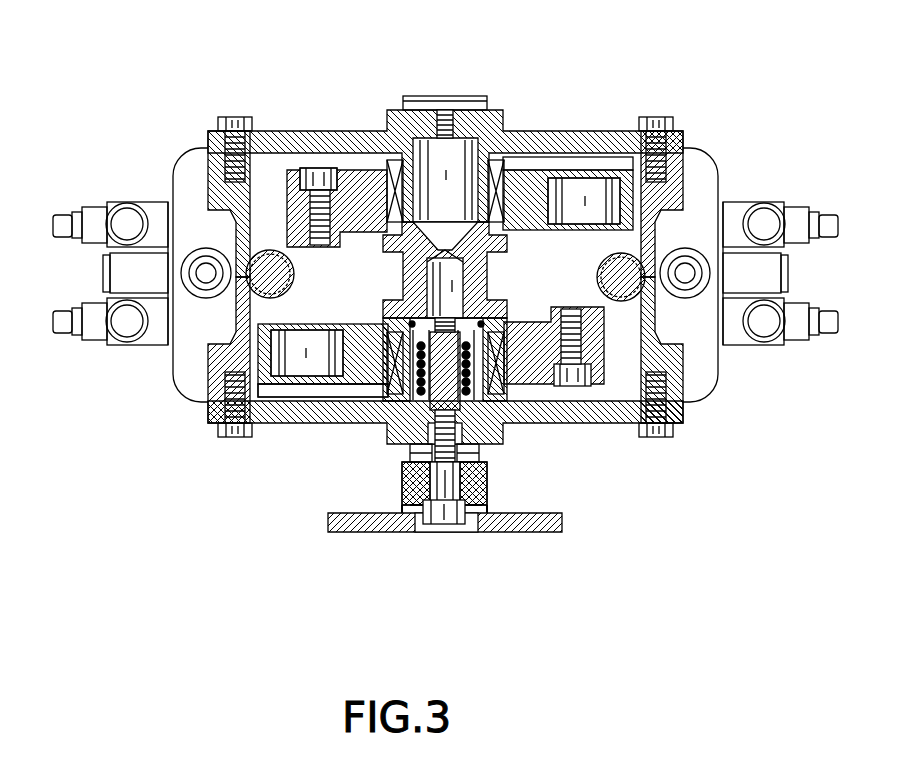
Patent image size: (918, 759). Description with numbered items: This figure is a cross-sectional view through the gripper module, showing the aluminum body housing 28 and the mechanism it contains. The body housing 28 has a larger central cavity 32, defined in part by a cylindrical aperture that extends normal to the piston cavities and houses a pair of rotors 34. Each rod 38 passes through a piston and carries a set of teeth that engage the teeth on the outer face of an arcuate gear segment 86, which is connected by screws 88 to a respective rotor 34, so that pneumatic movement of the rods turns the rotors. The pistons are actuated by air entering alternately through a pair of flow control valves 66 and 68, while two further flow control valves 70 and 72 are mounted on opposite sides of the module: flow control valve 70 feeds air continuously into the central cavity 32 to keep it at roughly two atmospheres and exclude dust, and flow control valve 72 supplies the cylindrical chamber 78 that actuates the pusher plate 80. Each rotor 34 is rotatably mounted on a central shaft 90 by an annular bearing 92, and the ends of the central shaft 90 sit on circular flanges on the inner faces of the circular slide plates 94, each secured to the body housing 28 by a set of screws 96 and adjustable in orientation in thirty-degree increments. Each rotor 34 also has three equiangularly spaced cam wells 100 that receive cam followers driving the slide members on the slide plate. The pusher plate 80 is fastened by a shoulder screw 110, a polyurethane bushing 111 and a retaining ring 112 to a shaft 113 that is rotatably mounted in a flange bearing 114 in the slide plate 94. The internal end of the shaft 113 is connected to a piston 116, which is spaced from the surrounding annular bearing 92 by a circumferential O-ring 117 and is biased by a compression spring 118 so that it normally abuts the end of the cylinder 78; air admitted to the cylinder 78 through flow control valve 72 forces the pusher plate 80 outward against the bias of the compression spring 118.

The body housing 28 is at (190, 380).
The central cavity 32 is at (552, 253).
The rotor 34 is at (336, 170).
The rod 38 is at (215, 345).
The flow control valve 66 is at (152, 338).
The flow control valve 68 is at (127, 280).
The flow control valve 70 is at (155, 207).
The flow control valve 72 is at (738, 210).
The cylindrical chamber 78 is at (368, 130).
The pusher plate 80 is at (560, 532).
The arcuate gear segment 86 is at (297, 235).
The screw 88 is at (312, 168).
The central shaft 90 is at (483, 290).
The annular bearing 92 is at (503, 150).
The slide plate 94 is at (575, 157).
The screw 96 is at (237, 120).
The cam well 100 is at (598, 187).
The shoulder screw 110 is at (442, 530).
The polyurethane bushing 111 is at (497, 505).
The retaining ring 112 is at (392, 505).
The shaft 113 is at (407, 453).
The flange bearing 114 is at (492, 445).
The piston 116 is at (567, 400).
The O-ring 117 is at (396, 312).
The compression spring 118 is at (383, 420).